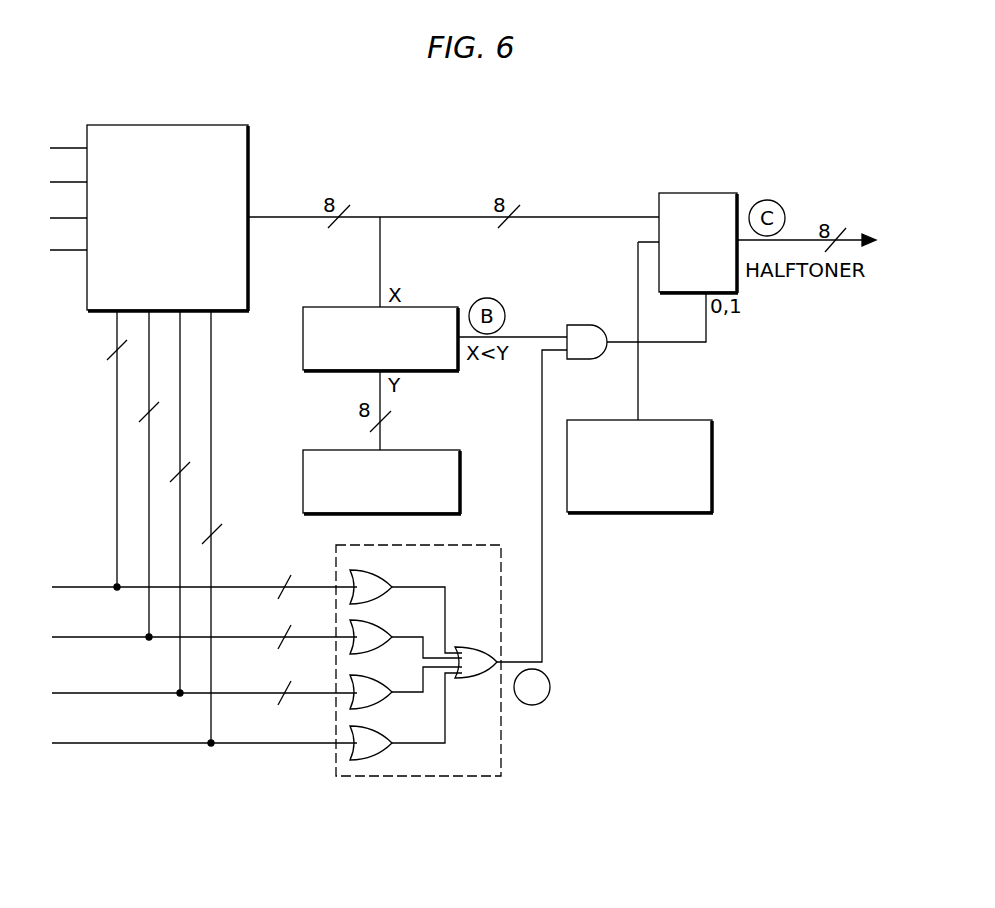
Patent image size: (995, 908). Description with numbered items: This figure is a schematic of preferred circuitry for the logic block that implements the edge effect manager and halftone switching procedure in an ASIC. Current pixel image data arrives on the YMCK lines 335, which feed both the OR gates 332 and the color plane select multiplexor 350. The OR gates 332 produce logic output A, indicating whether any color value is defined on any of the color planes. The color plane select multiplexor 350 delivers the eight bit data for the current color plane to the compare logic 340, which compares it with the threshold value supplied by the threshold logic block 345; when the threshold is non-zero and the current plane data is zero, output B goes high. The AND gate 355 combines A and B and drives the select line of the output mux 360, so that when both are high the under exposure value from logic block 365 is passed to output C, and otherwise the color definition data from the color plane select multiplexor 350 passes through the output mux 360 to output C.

The OR gates 332 is at (475, 777).
The YMCK lines 335 is at (72, 560).
The compare logic 340 is at (338, 307).
The threshold logic block 345 is at (338, 450).
The color plane select multiplexor 350 is at (250, 153).
The AND gate 355 is at (582, 325).
The output mux 360 is at (659, 202).
The logic block 365 is at (687, 420).